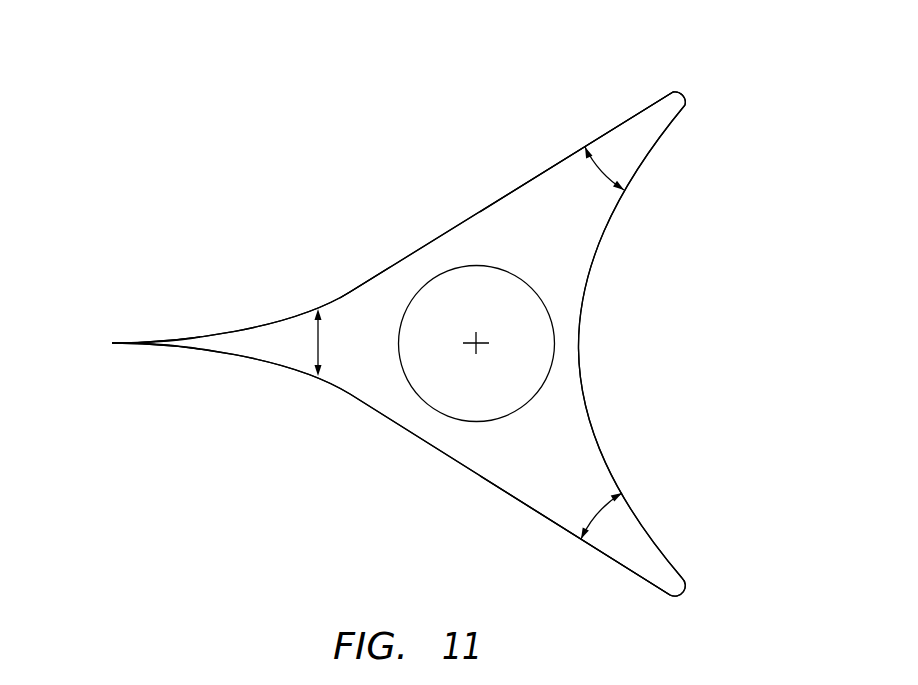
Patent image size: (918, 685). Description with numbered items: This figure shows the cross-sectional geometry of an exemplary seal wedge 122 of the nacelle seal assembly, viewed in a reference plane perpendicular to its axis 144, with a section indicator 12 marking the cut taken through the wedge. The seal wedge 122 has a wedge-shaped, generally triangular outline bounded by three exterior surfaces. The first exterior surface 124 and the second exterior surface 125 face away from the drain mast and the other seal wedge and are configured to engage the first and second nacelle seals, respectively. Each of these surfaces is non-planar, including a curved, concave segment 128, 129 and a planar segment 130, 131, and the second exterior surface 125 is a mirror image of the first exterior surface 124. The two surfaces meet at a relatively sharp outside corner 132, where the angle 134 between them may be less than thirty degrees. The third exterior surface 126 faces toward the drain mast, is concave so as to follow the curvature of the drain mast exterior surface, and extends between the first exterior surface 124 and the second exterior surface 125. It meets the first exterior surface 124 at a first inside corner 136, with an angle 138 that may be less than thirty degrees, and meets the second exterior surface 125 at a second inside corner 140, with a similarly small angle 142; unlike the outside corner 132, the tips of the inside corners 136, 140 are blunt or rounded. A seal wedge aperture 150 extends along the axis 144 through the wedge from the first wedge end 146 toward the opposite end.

The section line 12- 12 is at (30, 343).
The seal wedge 122 is at (731, 112).
The first exterior surface 124 is at (428, 230).
The second exterior surface 125 is at (437, 463).
The third exterior surface 126 is at (590, 319).
The curved segment 128 is at (253, 322).
The curved segment 129 is at (253, 363).
The planar segment 130 is at (530, 181).
The planar segment 131 is at (537, 513).
The outside corner 132 is at (120, 342).
The angle 134 is at (320, 349).
The first inside corner 136 is at (675, 92).
The angle 138 is at (604, 170).
The second inside corner 140 is at (683, 587).
The angle 142 is at (600, 515).
The axis 144 is at (477, 350).
The first wedge end 146 is at (363, 307).
The seal wedge aperture 150 is at (502, 310).